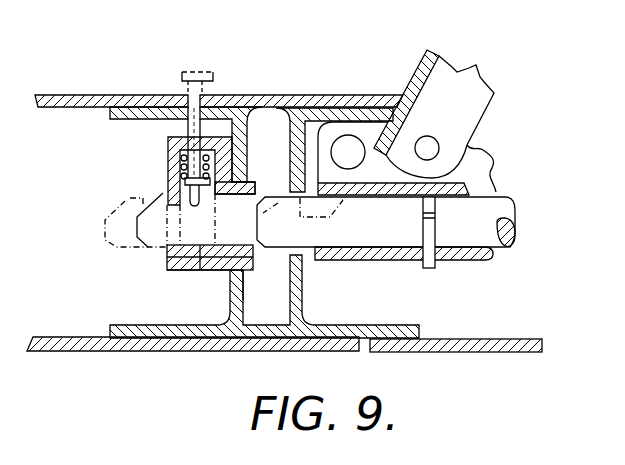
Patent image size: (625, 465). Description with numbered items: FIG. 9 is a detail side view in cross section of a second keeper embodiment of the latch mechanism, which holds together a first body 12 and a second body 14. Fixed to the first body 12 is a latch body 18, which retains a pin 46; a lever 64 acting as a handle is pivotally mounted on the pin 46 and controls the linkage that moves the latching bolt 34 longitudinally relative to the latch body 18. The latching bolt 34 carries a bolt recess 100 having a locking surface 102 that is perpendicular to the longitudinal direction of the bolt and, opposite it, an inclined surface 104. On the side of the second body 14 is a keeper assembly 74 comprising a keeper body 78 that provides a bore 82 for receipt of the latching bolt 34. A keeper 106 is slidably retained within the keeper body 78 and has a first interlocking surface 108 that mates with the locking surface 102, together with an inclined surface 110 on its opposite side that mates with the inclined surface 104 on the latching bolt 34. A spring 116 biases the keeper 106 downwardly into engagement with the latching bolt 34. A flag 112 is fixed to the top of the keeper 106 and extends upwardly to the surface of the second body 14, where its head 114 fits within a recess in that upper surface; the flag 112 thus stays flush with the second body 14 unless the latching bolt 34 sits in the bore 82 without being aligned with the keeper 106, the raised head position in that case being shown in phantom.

The first body 12 is at (478, 352).
The second body 14 is at (53, 347).
The latch body 18 is at (460, 258).
The latching bolt 34 is at (397, 240).
The pin 46 is at (437, 147).
The lever 64 is at (418, 70).
The keeper assembly 74 is at (167, 266).
The keeper body 78 is at (168, 270).
The bore 82 is at (253, 246).
The bolt recess 100 is at (186, 222).
The locking surface 102 is at (182, 186).
The inclined surface 104 is at (214, 197).
The keeper 106 is at (197, 270).
The first interlocking surface 108 is at (205, 205).
The inclined surface 110 is at (212, 217).
The flag 112 is at (200, 110).
The head 114 is at (186, 100).
The spring 116 is at (208, 170).